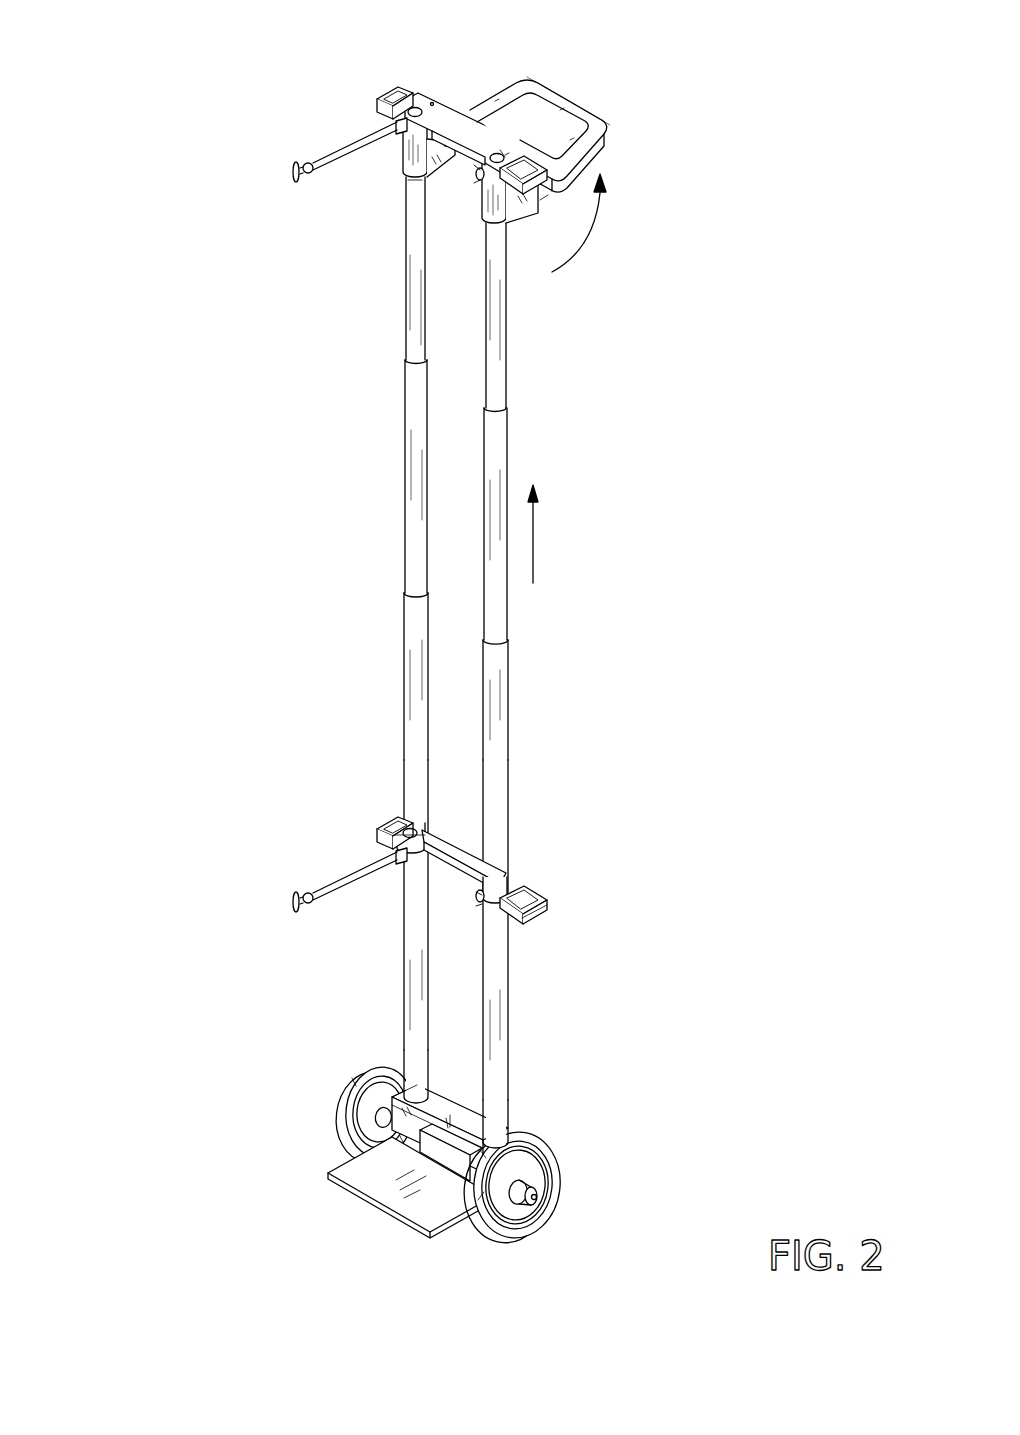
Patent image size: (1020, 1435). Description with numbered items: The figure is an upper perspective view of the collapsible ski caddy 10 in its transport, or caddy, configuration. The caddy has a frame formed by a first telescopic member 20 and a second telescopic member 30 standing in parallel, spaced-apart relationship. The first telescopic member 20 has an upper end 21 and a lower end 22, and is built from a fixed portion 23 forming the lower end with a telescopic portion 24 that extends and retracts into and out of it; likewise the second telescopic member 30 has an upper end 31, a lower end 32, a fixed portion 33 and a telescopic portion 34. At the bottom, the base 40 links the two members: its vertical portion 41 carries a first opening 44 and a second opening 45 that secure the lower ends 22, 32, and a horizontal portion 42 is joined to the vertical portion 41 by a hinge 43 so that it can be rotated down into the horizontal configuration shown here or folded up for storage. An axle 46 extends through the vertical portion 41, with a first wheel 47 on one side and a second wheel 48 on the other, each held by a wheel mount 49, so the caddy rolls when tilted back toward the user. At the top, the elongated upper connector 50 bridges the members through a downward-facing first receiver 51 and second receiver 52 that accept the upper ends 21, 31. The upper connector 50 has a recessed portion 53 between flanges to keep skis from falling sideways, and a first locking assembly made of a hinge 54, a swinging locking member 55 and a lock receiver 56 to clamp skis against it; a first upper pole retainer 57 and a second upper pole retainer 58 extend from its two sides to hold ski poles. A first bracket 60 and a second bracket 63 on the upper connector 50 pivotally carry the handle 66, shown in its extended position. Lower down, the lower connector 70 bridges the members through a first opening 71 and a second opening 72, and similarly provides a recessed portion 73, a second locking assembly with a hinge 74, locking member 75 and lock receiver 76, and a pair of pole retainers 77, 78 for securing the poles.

The collapsible ski caddy 10 is at (162, 137).
The first telescopic member 20 is at (400, 688).
The upper end 21 is at (400, 180).
The lower end 22 is at (323, 1128).
The fixed portion 23 is at (402, 916).
The telescopic portion 24 is at (405, 455).
The second telescopic member 30 is at (510, 442).
The upper end 31 is at (503, 230).
The lower end 32 is at (506, 1122).
The fixed portion 33 is at (507, 967).
The telescopic portion 34 is at (505, 620).
The base 40 is at (450, 1097).
The vertical portion 41 is at (412, 1130).
The horizontal portion 42 is at (402, 1205).
The hinge 43 is at (433, 1148).
The first opening 44 is at (417, 1080).
The second opening 45 is at (535, 1138).
The axle 46 is at (557, 1197).
The first wheel 47 is at (338, 1133).
The second wheel 48 is at (508, 1236).
The wheel mount 49 is at (540, 1213).
The upper connector 50 is at (448, 148).
The first receiver 51 is at (395, 165).
The second receiver 52 is at (484, 192).
The recessed portion 53 is at (498, 152).
The hinge 54 is at (397, 124).
The locking member 55 is at (306, 164).
The lock receiver 56 is at (481, 176).
The first upper pole retainer 57 is at (387, 88).
The second upper pole retainer 58 is at (589, 185).
The first bracket 60 is at (456, 153).
The second bracket 63 is at (528, 200).
The handle 66 is at (608, 110).
The lower connector 70 is at (453, 883).
The first opening 71 is at (420, 815).
The second opening 72 is at (512, 882).
The recessed portion 73 is at (487, 850).
The hinge 74 is at (395, 857).
The locking member 75 is at (306, 893).
The lock receiver 76 is at (475, 900).
The pole retainer 77 is at (390, 824).
The pole retainer 78 is at (541, 924).